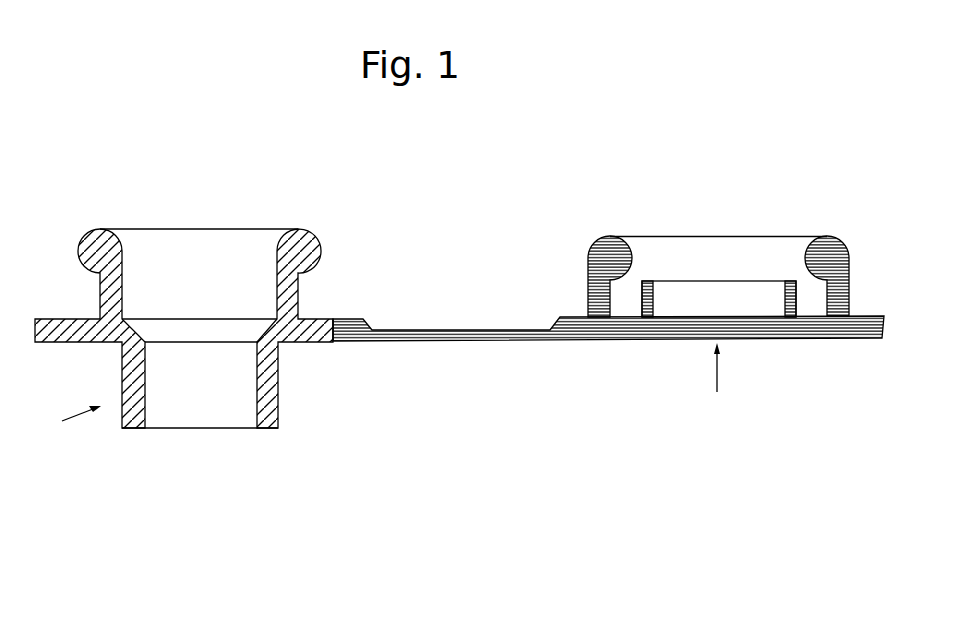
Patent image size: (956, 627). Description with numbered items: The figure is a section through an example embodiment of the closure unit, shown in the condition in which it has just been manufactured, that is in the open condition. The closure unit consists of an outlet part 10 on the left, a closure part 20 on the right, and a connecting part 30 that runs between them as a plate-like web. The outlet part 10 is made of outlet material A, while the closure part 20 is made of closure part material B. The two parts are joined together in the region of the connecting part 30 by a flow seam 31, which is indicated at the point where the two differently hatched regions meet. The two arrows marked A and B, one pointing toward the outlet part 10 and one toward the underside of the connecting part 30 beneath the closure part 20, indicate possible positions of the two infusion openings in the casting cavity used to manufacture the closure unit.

The outlet part 10 is at (220, 216).
The closure part 20 is at (720, 222).
The connecting part 30 is at (450, 302).
The flow seam 31 is at (333, 341).
The outlet material A is at (81, 404).
The closure part material B is at (717, 389).